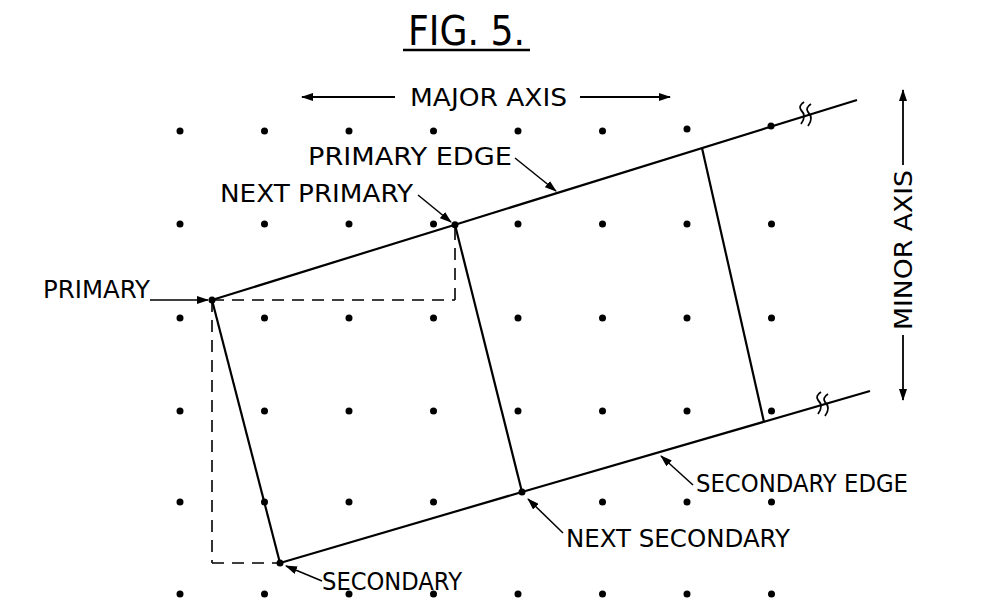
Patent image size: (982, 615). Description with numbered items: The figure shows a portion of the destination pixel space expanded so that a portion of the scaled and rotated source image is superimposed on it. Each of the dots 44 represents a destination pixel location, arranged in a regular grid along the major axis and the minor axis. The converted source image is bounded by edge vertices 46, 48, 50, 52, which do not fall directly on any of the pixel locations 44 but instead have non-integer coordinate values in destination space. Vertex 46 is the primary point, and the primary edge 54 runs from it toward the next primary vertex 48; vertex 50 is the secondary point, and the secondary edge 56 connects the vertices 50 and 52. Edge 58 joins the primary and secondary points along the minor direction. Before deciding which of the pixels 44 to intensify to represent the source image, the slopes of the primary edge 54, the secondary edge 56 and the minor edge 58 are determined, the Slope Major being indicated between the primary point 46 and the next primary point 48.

The dots 44 is at (434, 318).
The vertex 46 is at (211, 298).
The vertex 48 is at (459, 235).
The vertex 50 is at (283, 560).
The vertex 52 is at (525, 490).
The primary edge 54 is at (311, 269).
The secondary edge 56 is at (407, 528).
The edge 58 is at (262, 525).